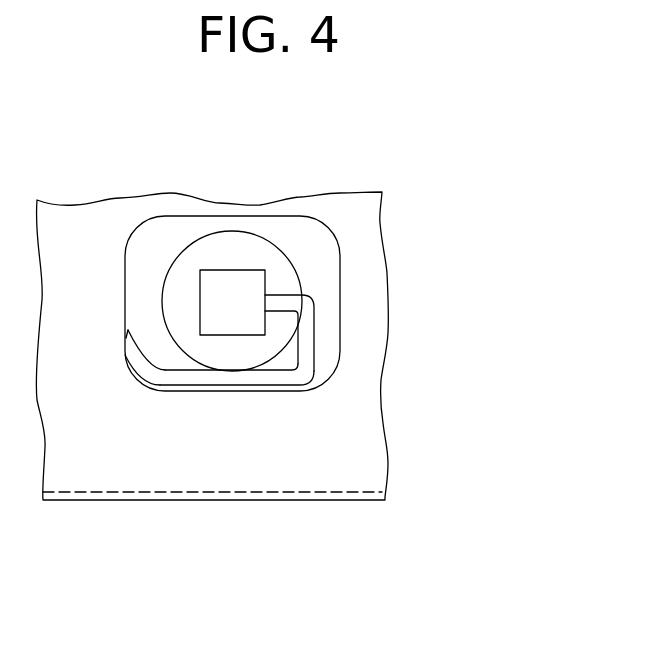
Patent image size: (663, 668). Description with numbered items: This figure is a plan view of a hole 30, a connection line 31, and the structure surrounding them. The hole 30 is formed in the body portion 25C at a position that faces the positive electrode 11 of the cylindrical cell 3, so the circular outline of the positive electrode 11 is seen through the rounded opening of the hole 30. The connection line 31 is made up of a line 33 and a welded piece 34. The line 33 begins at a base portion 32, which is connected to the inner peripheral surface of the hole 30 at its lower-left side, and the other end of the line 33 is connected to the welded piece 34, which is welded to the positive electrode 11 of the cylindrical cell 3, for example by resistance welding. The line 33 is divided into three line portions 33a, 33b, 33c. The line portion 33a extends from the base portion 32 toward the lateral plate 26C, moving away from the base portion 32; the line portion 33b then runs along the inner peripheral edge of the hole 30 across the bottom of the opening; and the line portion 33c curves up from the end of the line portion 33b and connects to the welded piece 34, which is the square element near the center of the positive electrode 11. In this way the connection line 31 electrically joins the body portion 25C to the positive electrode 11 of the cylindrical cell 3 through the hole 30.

The cylindrical cell 3 is at (284, 329).
The positive electrode 11 is at (337, 301).
The body portion 25C is at (330, 421).
The lateral plate 26C is at (372, 492).
The hole 30 is at (338, 259).
The connection line 31 is at (132, 138).
The base portion 32 is at (126, 336).
The line 33 is at (209, 388).
The line portion 33a is at (143, 364).
The line portion 33b is at (218, 378).
The line portion 33c is at (307, 347).
The welded piece 34 is at (230, 307).